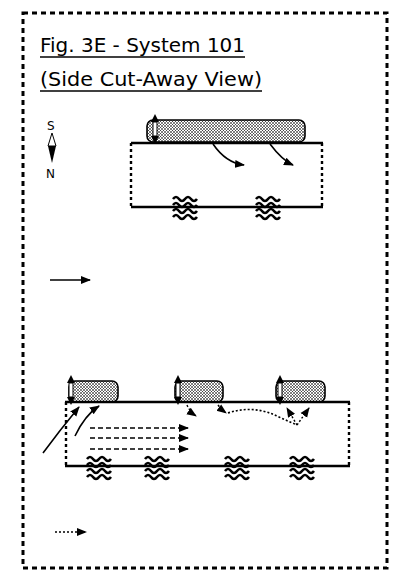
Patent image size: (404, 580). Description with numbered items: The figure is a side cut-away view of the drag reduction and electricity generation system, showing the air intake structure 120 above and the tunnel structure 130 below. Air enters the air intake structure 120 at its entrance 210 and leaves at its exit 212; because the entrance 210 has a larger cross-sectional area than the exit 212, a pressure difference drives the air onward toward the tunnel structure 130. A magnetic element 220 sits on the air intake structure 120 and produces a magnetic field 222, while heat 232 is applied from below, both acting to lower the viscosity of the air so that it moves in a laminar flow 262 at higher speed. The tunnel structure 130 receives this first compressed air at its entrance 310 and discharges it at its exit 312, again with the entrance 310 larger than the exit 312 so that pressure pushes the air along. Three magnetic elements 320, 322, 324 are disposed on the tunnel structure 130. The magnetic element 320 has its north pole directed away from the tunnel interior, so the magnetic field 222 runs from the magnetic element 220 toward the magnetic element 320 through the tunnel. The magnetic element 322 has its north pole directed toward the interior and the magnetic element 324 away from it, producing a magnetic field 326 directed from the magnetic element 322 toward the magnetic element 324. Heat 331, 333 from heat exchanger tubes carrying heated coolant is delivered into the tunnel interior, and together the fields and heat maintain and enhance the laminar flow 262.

The air intake structure 120 is at (342, 109).
The magnetic element 220 is at (226, 129).
The entrance 210 is at (128, 176).
The exit 212 is at (324, 186).
The heat 232 is at (265, 221).
The magnetic field 222 is at (141, 283).
The tunnel structure 130 is at (344, 400).
The entrance 310 is at (63, 434).
The exit 312 is at (350, 440).
The magnetic element 320 is at (150, 365).
The magnetic element 322 is at (197, 365).
The magnetic element 324 is at (250, 365).
The laminar flow 262 is at (139, 438).
The heat 331 is at (160, 483).
The heat 333 is at (300, 483).
The magnetic field 326 is at (141, 536).